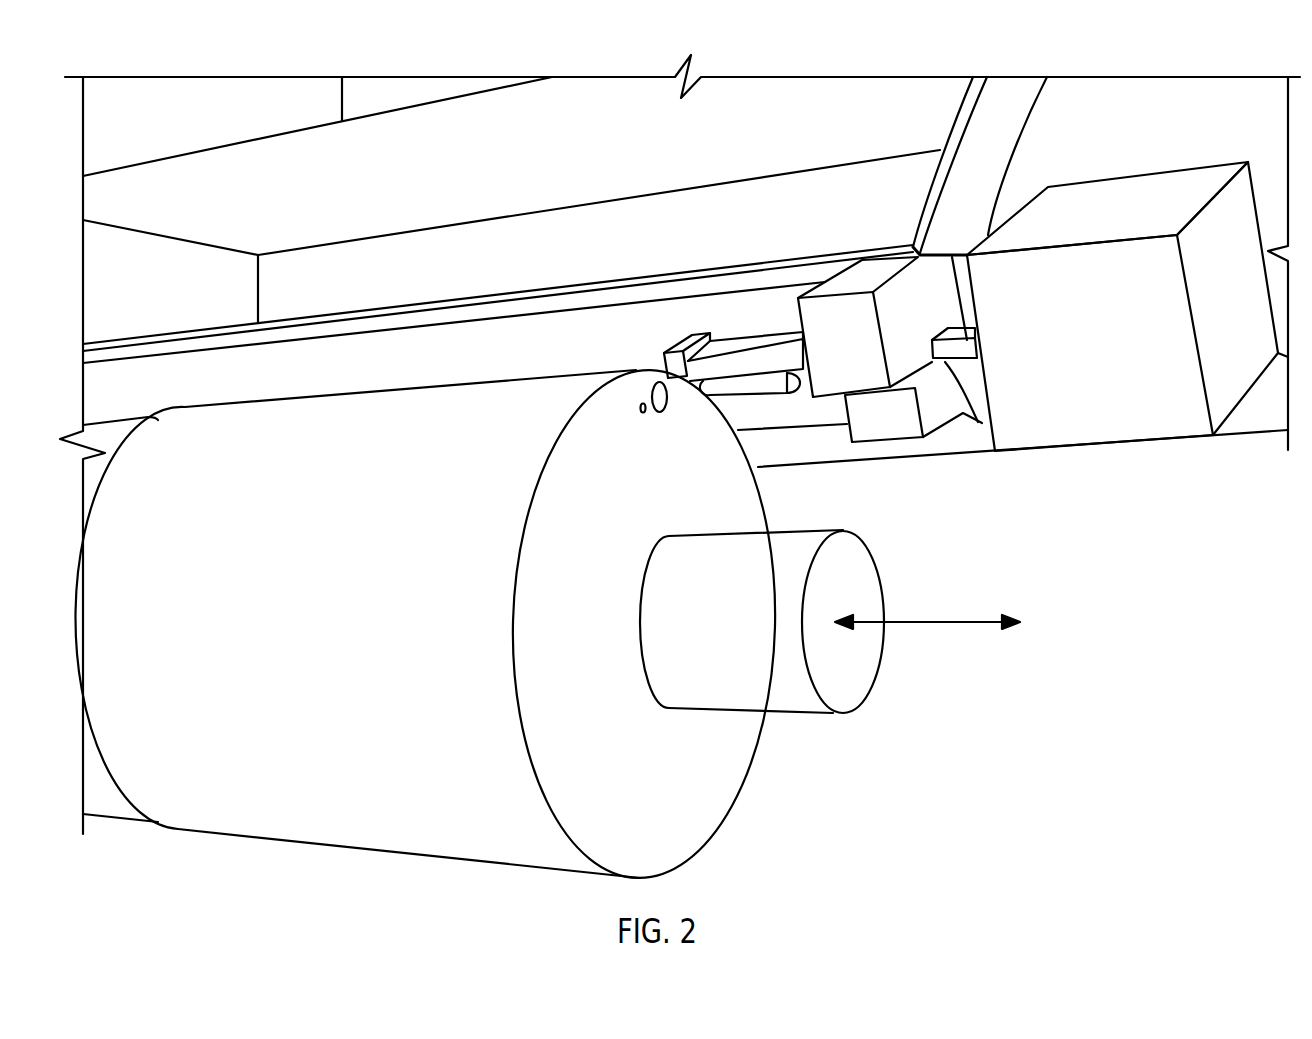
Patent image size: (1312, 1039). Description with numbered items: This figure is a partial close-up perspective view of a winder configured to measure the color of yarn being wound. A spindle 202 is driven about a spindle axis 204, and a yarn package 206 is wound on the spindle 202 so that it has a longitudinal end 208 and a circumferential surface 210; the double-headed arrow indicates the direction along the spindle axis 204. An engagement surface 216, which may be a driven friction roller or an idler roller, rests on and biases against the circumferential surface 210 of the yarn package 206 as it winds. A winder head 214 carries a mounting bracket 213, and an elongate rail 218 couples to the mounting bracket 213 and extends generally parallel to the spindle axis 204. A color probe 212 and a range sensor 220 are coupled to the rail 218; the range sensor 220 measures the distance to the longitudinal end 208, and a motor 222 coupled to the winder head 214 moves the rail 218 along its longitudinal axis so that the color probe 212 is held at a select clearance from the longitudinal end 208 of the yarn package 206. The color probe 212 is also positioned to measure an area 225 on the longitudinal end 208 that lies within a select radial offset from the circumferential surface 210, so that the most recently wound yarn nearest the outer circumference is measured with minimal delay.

The spindle 202 is at (846, 670).
The spindle axis 204 is at (962, 618).
The yarn package 206 is at (723, 763).
The longitudinal end 208 is at (723, 517).
The circumferential surface 210 is at (467, 438).
The color probe 212 is at (740, 389).
The mounting bracket 213 is at (1097, 380).
The winder head 214 is at (1138, 135).
The engagement surface 216 is at (445, 350).
The rail 218 is at (955, 354).
The range sensor 220 is at (662, 362).
The motor 222 is at (807, 318).
The measured area 225 is at (643, 414).